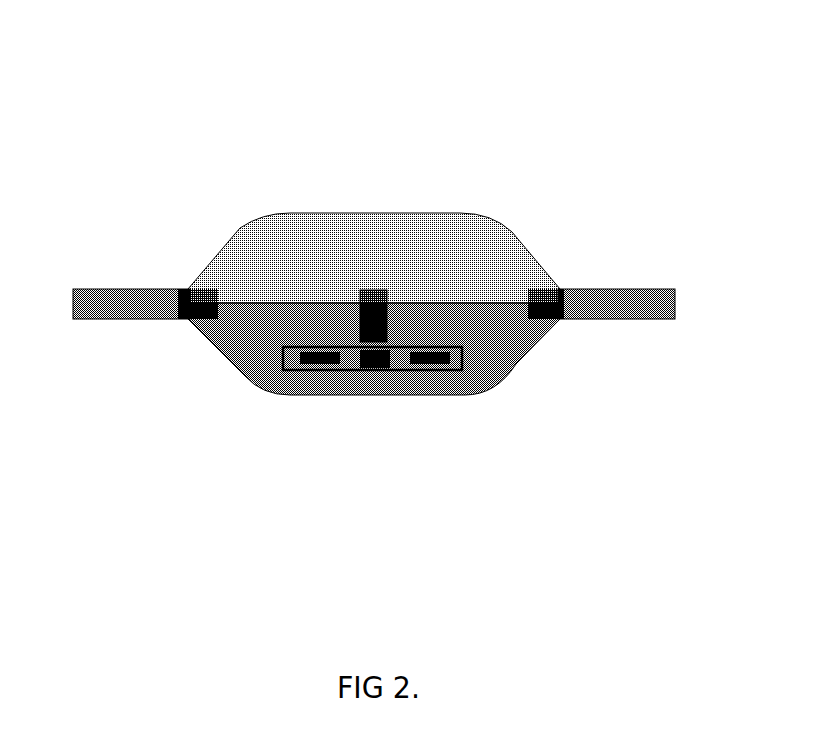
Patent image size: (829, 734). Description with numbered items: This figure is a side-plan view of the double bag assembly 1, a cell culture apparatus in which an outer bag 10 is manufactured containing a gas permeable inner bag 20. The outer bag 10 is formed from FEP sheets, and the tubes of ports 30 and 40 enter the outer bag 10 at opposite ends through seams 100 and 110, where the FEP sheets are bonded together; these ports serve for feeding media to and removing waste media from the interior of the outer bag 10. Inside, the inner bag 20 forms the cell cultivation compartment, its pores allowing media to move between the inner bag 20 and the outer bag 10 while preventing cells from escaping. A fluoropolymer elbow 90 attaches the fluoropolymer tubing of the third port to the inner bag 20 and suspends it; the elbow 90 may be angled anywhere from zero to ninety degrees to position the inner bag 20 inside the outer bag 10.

The double bag assembly 1 is at (422, 115).
The outer bag 10 is at (315, 205).
The inner bag 20 is at (325, 378).
The port 30 is at (112, 333).
The port 40 is at (637, 333).
The fluoropolymer elbow 90 is at (385, 278).
The seam 100 is at (180, 272).
The seam 110 is at (573, 272).